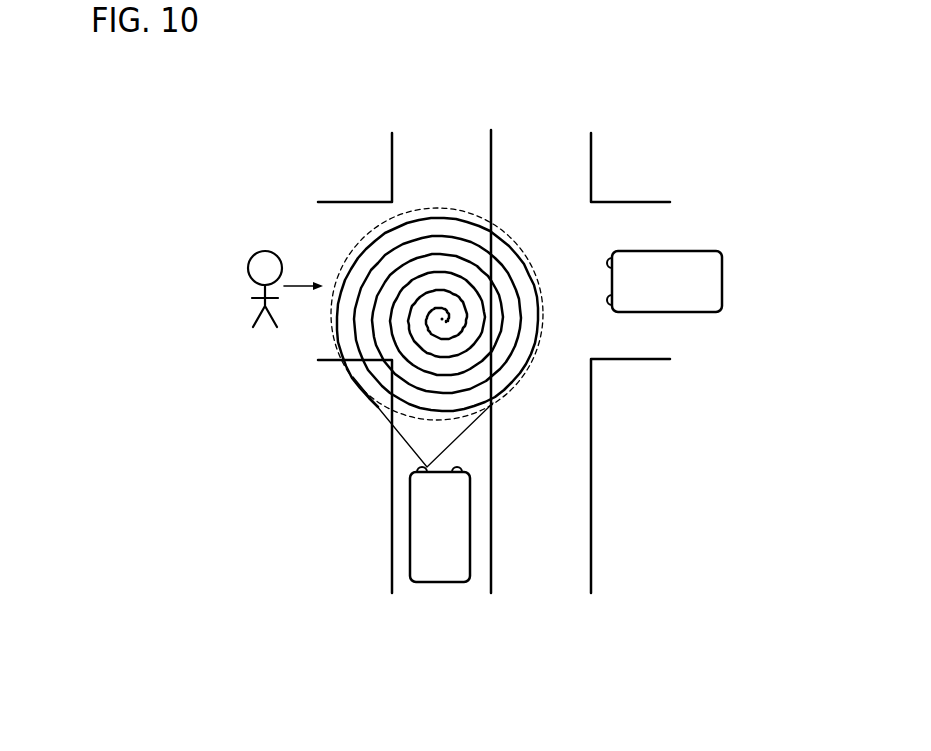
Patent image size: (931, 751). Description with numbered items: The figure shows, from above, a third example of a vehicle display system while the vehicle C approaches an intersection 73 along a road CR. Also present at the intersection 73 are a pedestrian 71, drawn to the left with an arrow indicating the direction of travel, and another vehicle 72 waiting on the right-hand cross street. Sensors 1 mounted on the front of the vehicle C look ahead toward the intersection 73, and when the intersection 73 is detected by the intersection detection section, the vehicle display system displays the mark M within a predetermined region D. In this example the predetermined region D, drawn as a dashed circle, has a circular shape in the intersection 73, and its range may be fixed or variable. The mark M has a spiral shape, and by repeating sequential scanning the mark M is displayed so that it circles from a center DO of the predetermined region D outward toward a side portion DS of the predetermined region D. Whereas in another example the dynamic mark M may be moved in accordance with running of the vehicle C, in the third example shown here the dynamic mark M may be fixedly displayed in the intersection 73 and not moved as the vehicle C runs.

The sensor 1 is at (421, 468).
The pedestrian 71 is at (261, 243).
The another vehicle 72 is at (692, 259).
The intersection 73 is at (537, 223).
The vehicle C is at (447, 578).
The road CR is at (437, 152).
The predetermined region D is at (545, 318).
The side portion of the predetermined region DS is at (346, 368).
The center of the predetermined region DO is at (442, 319).
The mark M is at (372, 378).